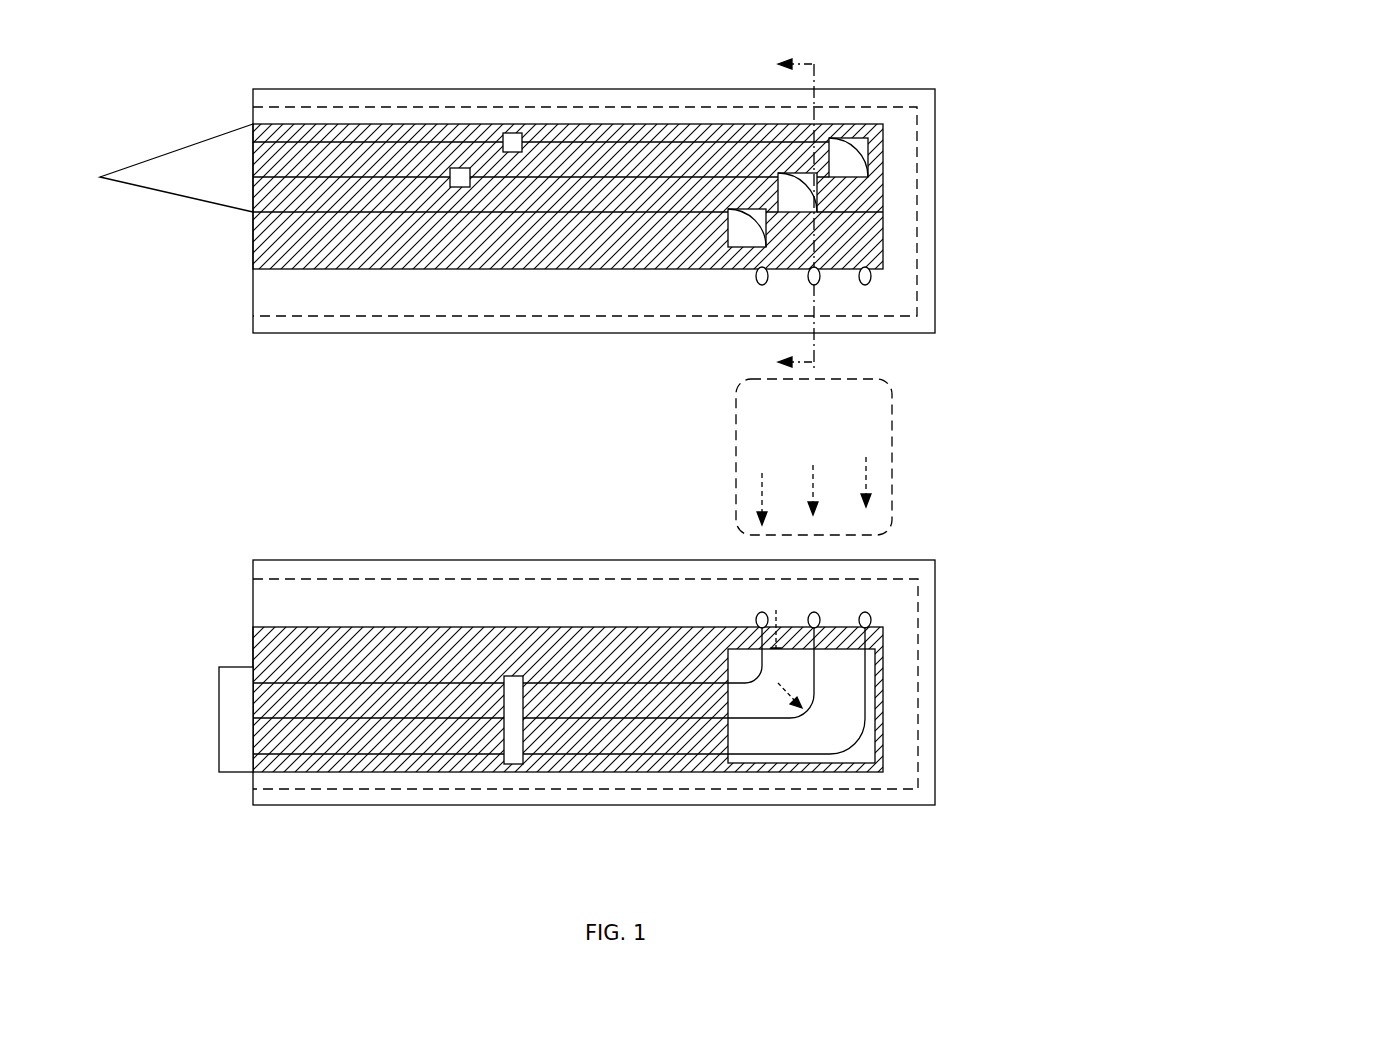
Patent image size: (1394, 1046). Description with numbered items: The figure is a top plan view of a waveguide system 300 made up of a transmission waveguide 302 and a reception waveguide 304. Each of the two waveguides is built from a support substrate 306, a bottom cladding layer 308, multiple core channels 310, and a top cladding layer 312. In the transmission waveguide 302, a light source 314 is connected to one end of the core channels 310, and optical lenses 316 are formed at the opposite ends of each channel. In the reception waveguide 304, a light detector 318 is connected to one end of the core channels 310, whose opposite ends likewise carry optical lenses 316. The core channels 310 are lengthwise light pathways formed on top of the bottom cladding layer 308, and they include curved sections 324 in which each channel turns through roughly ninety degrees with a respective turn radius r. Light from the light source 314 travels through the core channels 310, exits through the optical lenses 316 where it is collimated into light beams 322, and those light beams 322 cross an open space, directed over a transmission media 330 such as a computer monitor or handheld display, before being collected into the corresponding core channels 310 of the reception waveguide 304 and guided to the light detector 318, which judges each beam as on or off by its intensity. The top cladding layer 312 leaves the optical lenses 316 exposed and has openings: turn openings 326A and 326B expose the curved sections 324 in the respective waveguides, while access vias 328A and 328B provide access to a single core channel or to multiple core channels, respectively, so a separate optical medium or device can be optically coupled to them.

The waveguide system 300 is at (1298, 240).
The transmission waveguide 302 is at (1022, 90).
The reception waveguide 304 is at (1022, 563).
The support substrate 306 is at (253, 323).
The bottom cladding layer 308 is at (253, 304).
The core channels 310 is at (313, 212).
The top cladding layer 312 is at (253, 248).
The light source 314 is at (183, 210).
The optical lenses 316 is at (865, 286).
The light detector 318 is at (219, 740).
The light beams 322 is at (813, 478).
The curved sections 324 is at (818, 712).
The turn opening 326A is at (817, 190).
The turn opening 326B is at (877, 694).
The access via 328A is at (460, 168).
The access via 328B is at (510, 765).
The transmission media 330 is at (892, 435).